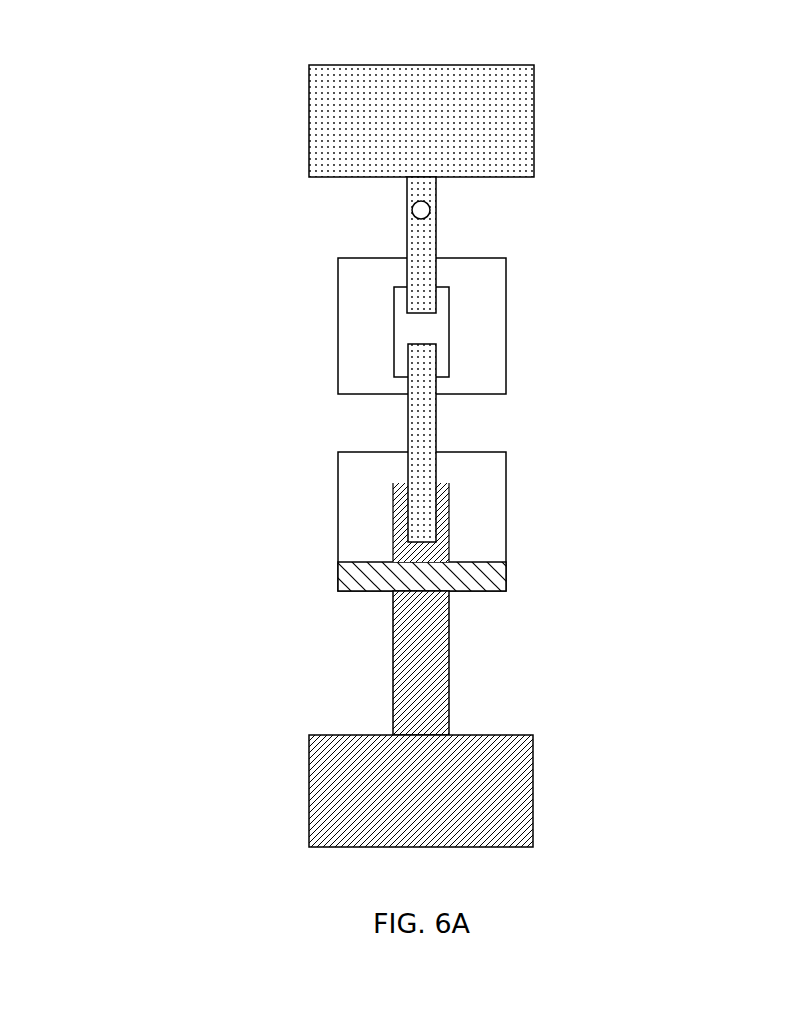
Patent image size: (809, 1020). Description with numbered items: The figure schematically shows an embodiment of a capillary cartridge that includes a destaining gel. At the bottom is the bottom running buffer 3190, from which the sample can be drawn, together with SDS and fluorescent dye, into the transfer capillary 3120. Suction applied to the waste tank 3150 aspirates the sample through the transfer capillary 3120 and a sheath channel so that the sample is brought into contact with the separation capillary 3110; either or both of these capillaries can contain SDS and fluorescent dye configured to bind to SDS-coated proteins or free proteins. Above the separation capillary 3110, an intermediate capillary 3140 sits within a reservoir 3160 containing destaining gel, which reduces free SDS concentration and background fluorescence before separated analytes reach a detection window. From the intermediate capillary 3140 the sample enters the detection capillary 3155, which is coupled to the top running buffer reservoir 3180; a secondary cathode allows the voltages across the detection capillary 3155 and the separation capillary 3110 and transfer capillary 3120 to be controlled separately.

The top running buffer reservoir 3180 is at (505, 120).
The detection capillary 3155 is at (407, 238).
The reservoir 3160 is at (365, 329).
The intermediate capillary 3140 is at (453, 349).
The separation capillary 3110 is at (430, 427).
The waste tank 3150 is at (337, 488).
The transfer capillary 3120 is at (440, 630).
The bottom running buffer 3190 is at (359, 768).